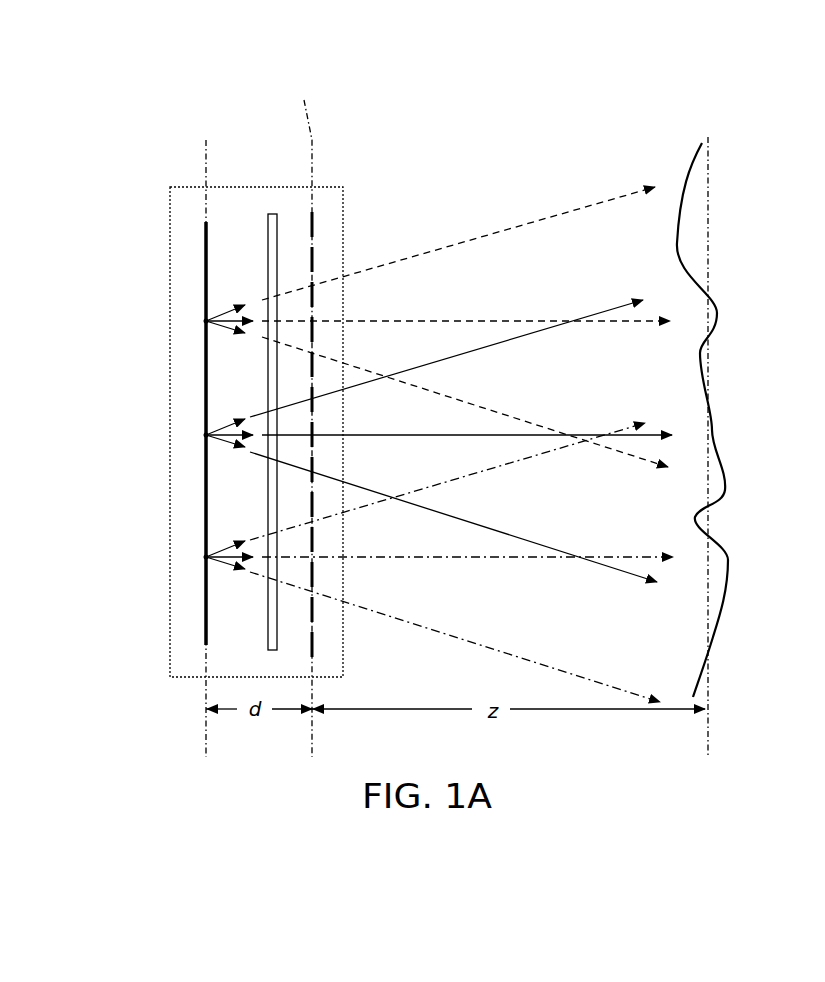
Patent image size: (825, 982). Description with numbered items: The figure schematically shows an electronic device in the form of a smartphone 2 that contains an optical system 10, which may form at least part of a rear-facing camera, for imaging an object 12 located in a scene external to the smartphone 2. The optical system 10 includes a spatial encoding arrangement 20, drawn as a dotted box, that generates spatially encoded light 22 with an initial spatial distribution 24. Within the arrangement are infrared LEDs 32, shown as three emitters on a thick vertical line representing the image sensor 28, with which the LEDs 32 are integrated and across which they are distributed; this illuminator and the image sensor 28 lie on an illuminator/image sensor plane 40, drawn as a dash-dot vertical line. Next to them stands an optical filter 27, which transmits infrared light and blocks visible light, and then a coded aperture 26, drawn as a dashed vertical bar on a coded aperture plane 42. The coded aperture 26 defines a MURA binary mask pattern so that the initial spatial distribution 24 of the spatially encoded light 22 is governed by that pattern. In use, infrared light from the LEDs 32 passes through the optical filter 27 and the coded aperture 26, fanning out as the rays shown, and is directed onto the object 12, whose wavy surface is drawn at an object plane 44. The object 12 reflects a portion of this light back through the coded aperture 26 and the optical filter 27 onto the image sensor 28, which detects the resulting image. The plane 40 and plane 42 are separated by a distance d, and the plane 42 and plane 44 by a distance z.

The smartphone 2 is at (148, 643).
The optical system 10 is at (188, 655).
The object 12 is at (713, 637).
The spatial encoding arrangement 20 is at (240, 210).
The spatially encoded light 22 is at (500, 193).
The initial spatial distribution 24 is at (325, 262).
The coded aperture 26 is at (313, 222).
The optical filter 27 is at (273, 213).
The image sensor 28 is at (206, 278).
The infrared LEDs 32 is at (206, 321).
The illuminator/image sensor plane 40 is at (206, 140).
The coded aperture plane 42 is at (307, 413).
The object plane 44 is at (710, 200).